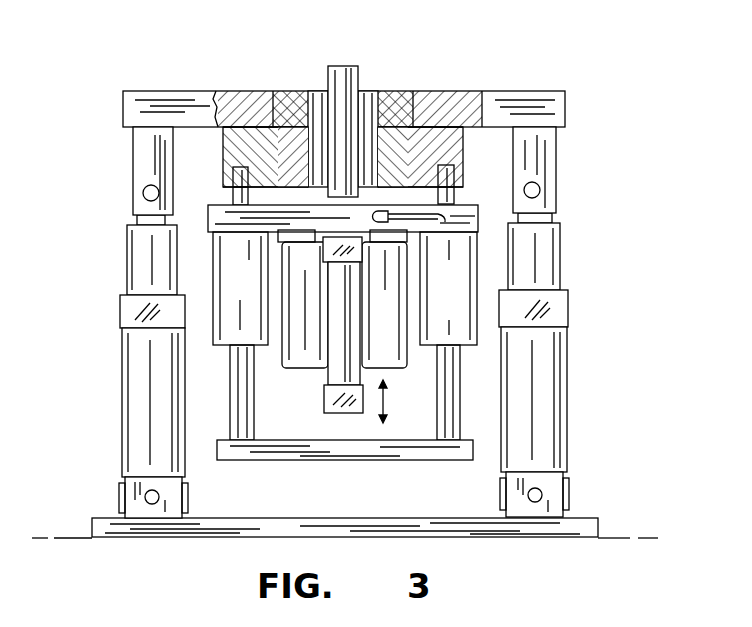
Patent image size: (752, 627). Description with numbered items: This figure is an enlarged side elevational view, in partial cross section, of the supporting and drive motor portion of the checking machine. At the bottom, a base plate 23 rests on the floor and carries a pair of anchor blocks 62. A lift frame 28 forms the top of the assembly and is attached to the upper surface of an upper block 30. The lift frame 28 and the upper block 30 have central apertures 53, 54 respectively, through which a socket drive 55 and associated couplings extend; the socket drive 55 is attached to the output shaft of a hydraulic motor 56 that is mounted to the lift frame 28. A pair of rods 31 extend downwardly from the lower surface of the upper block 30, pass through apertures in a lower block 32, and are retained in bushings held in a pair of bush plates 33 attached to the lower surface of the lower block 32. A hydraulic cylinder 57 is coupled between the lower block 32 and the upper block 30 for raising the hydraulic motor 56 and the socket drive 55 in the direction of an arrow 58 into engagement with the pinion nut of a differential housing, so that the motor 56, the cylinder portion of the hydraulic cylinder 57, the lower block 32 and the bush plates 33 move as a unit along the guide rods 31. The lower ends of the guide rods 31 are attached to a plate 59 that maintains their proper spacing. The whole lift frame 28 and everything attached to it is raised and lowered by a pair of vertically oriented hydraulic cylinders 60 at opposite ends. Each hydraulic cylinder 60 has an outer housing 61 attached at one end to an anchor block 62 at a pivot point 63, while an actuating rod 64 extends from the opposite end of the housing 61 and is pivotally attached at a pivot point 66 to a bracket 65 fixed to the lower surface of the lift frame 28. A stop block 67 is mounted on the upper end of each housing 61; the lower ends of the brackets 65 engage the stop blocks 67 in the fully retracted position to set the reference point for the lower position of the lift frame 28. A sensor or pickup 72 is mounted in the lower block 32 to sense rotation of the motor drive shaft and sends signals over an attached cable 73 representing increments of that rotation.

The base plate 23 is at (470, 530).
The lift frame 28 is at (495, 98).
The upper block 30 is at (452, 140).
The rods 31 is at (233, 198).
The lower block 32 is at (250, 224).
The bush plates 33 is at (255, 304).
The central aperture 53 is at (318, 100).
The central aperture 54 is at (373, 138).
The socket drive 55 is at (350, 72).
The hydraulic motor 56 is at (297, 352).
The hydraulic cylinder 57 is at (335, 408).
The arrow 58 is at (385, 402).
The plate 59 is at (342, 455).
The hydraulic cylinders 60 is at (344, 350).
The outer housing 61 is at (140, 388).
The anchor block 62 is at (172, 488).
The pivot point 63 is at (145, 497).
The actuating rod 64 is at (147, 217).
The bracket 65 is at (143, 150).
The pivot point 66 is at (143, 192).
The stop block 67 is at (135, 262).
The pickup 72 is at (383, 215).
The cable 73 is at (423, 215).